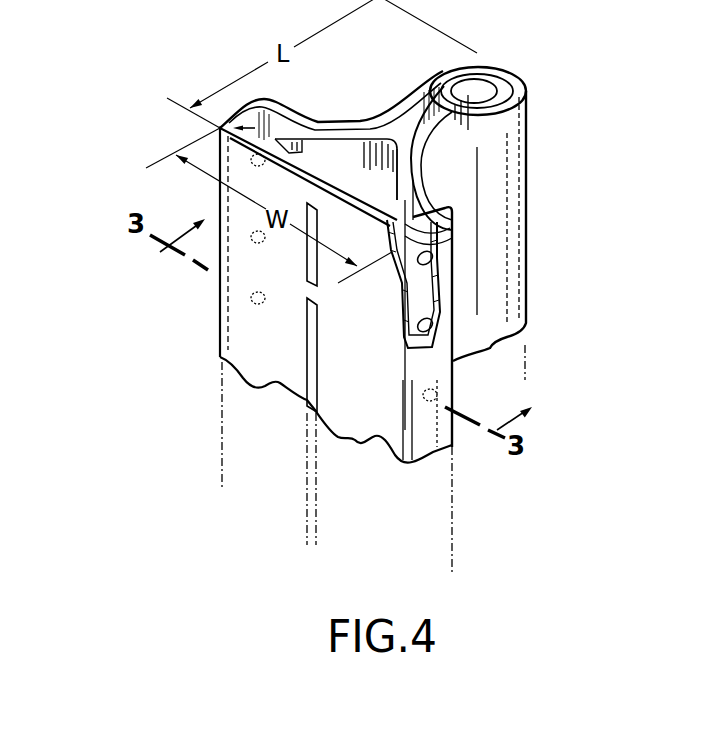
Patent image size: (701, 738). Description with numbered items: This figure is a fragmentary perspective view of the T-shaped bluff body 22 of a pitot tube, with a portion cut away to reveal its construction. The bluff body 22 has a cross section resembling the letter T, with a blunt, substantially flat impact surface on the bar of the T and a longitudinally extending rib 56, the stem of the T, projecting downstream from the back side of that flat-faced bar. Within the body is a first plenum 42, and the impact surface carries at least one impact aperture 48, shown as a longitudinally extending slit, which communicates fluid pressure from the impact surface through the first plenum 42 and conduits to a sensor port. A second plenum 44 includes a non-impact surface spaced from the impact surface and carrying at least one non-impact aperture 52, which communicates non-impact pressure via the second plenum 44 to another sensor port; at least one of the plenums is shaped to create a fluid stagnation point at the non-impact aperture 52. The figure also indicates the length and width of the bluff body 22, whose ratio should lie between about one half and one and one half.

The bluff body 22 is at (112, 160).
The first plenum 42 is at (350, 153).
The second plenum 44 is at (220, 128).
The impact aperture 48 is at (308, 345).
The non-impact aperture 52 is at (428, 262).
The rib 56 is at (466, 156).